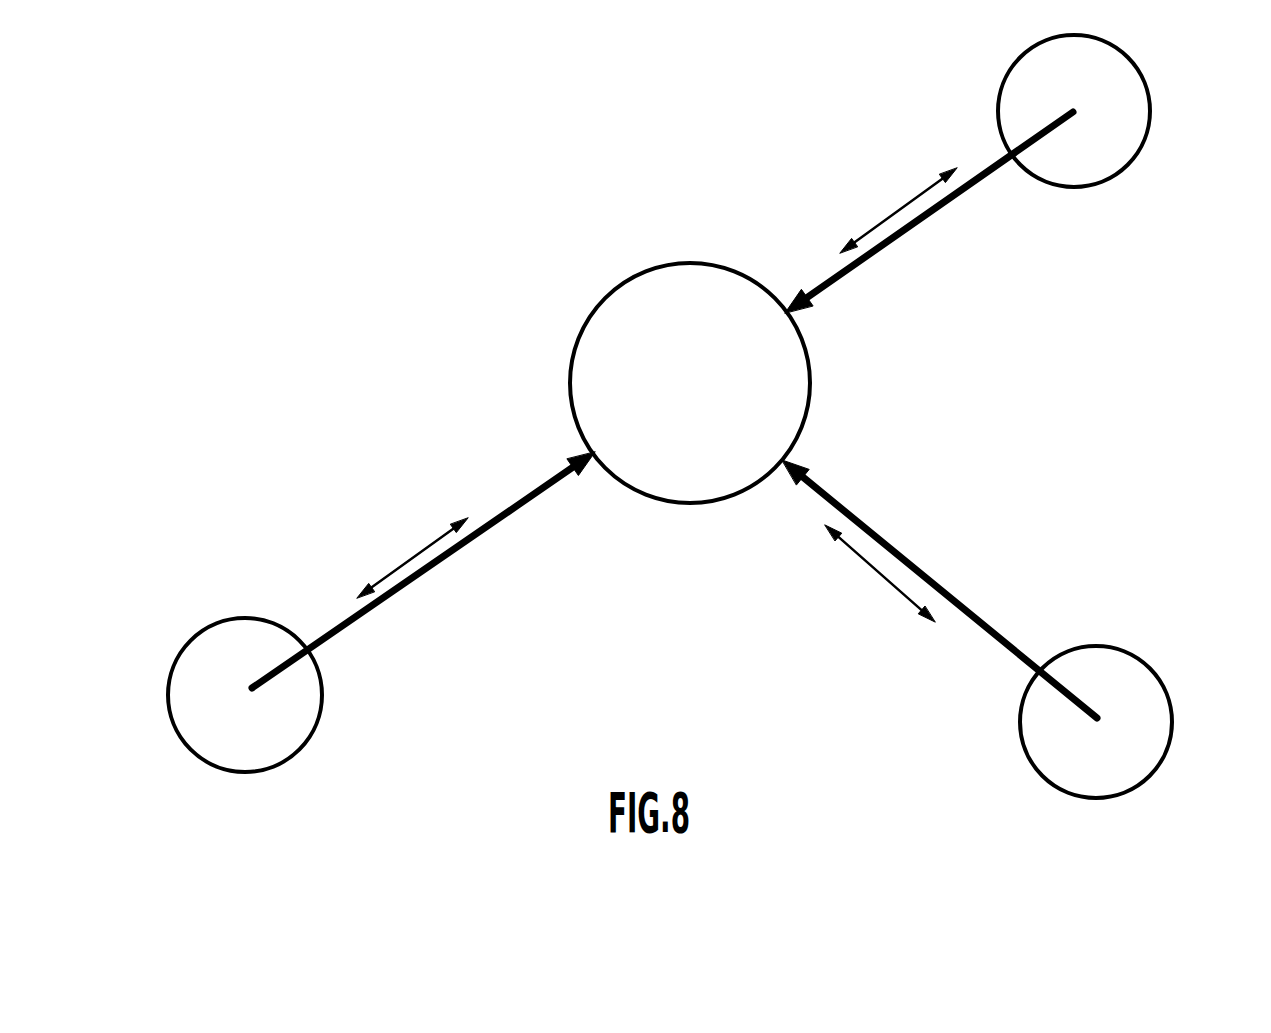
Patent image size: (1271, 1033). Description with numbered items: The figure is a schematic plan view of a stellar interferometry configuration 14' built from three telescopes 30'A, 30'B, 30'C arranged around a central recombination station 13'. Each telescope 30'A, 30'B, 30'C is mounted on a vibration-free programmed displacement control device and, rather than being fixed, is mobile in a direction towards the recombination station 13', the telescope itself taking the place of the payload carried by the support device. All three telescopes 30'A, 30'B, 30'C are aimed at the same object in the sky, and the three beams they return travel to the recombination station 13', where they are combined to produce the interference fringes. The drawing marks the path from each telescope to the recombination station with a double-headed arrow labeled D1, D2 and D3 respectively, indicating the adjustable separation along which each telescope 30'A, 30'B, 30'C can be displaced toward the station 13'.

The recombination station 13' is at (690, 344).
The stellar interferometry configuration 14' is at (674, 415).
The telescope 30'A is at (238, 720).
The telescope 30'B is at (1121, 742).
The telescope 30'C is at (1125, 115).
The distance between station 30'A and receiver D1 is at (412, 550).
The distance between station 30'B and receiver D2 is at (880, 586).
The distance between station 30'C and receiver D3 is at (898, 206).